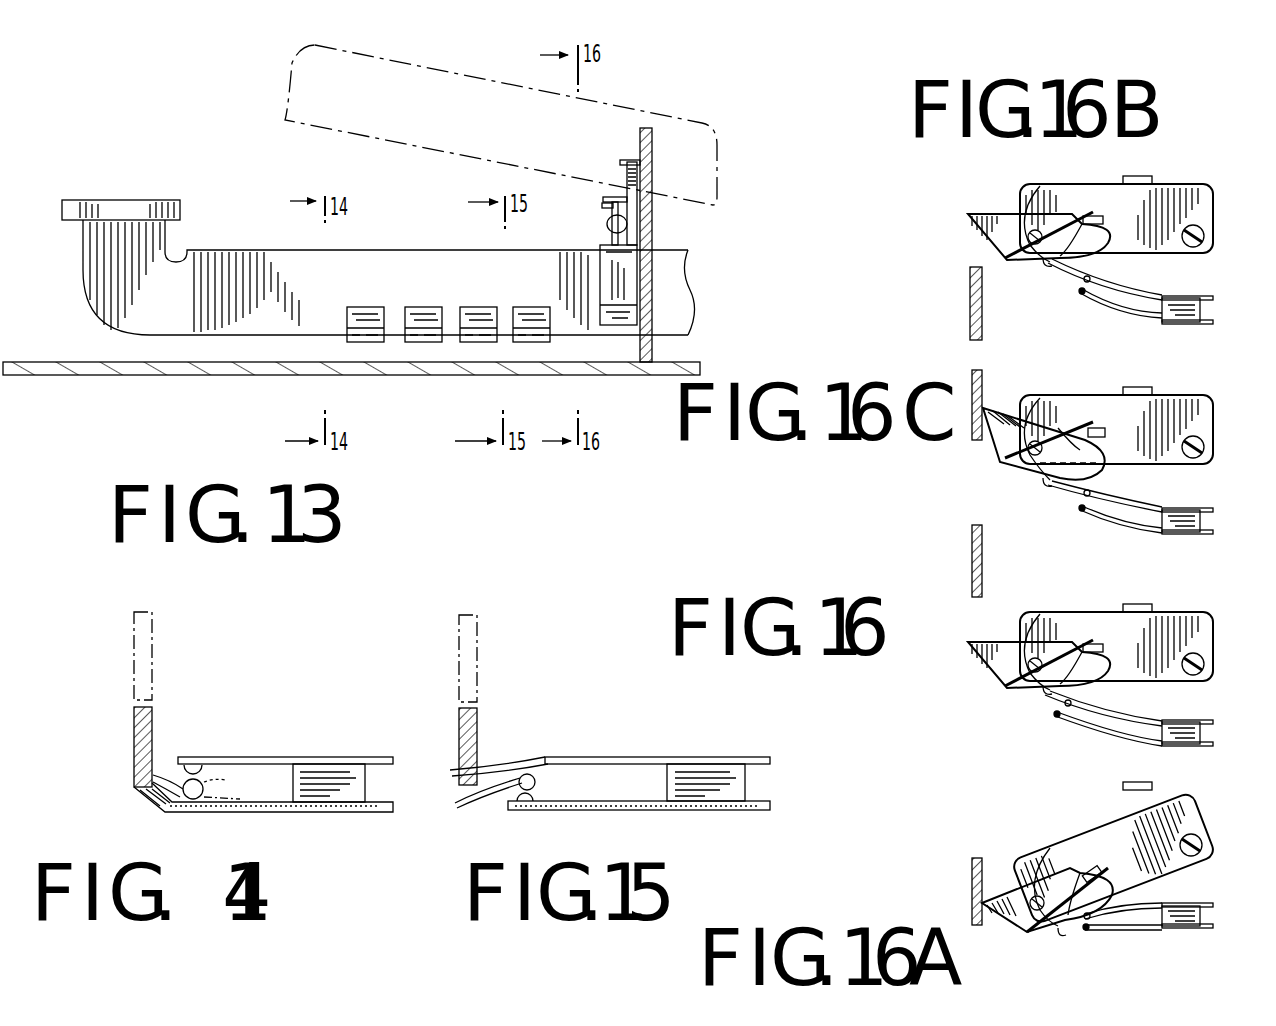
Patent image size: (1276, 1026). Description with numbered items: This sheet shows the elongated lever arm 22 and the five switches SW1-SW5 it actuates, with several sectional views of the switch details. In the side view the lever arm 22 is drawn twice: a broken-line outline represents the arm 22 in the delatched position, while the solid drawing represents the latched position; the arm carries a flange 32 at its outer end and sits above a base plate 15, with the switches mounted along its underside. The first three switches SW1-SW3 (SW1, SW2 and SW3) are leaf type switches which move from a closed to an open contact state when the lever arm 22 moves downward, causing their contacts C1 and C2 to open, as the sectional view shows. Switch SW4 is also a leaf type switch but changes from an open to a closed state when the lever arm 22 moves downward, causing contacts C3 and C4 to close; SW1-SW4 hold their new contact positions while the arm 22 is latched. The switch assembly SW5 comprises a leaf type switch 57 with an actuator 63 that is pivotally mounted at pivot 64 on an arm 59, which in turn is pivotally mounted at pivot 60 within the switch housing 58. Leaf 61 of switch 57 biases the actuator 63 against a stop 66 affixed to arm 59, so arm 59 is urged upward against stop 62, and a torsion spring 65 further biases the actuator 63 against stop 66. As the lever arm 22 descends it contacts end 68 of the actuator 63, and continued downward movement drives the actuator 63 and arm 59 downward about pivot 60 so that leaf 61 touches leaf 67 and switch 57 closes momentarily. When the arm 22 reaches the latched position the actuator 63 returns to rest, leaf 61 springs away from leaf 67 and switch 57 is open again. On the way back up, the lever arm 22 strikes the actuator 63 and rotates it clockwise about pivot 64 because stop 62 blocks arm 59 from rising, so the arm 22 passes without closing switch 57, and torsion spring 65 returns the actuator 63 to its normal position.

In FIG. 13, the base plate 15 is at (115, 375).
In FIG. 13, the lever arm 22 is at (292, 73).
In FIG. 14, the lever arm 22 is at (134, 640).
In FIG. 15, the lever arm 22 is at (480, 645).
In FIG. 16B, the lever arm 22 is at (983, 315).
In FIG. 16C, the lever arm 22 is at (982, 372).
In FIG. 16, the lever arm 22 is at (983, 550).
In FIG. 16A, the lever arm 22 is at (980, 925).
In FIG. 13, the handle flange 32 is at (150, 200).
In FIG. 13, the switch 57 is at (627, 263).
In FIG. 16B, the switch 57 is at (1195, 300).
In FIG. 16C, the switch 57 is at (1185, 512).
In FIG. 16, the switch 57 is at (1190, 722).
In FIG. 16A, the switch 57 is at (1185, 905).
In FIG. 16B, the latch assembly housing 58 is at (1134, 188).
In FIG. 16C, the latch assembly housing 58 is at (1137, 411).
In FIG. 16, the latch assembly housing 58 is at (1134, 624).
In FIG. 16A, the latch assembly housing 58 is at (1129, 846).
In FIG. 16B, the arm 59 is at (1205, 202).
In FIG. 16C, the arm 59 is at (1205, 420).
In FIG. 16, the arm 59 is at (1205, 630).
In FIG. 16A, the arm 59 is at (1200, 818).
In FIG. 16B, the pivot 60 is at (1207, 238).
In FIG. 16C, the pivot 60 is at (1207, 455).
In FIG. 16, the pivot 60 is at (1207, 665).
In FIG. 16A, the pivot 60 is at (1204, 848).
In FIG. 16B, the leaf 61 is at (1110, 290).
In FIG. 16C, the leaf 61 is at (1115, 505).
In FIG. 16, the leaf 61 is at (1118, 713).
In FIG. 16A, the leaf 61 is at (1120, 903).
In FIG. 16B, the stop 62 is at (1133, 176).
In FIG. 16C, the stop 62 is at (1133, 387).
In FIG. 16, the stop 62 is at (1128, 604).
In FIG. 16A, the stop 62 is at (1122, 785).
In FIG. 16B, the actuator 63 is at (1040, 262).
In FIG. 16C, the actuator 63 is at (1042, 480).
In FIG. 16, the actuator 63 is at (1040, 690).
In FIG. 16A, the actuator 63 is at (1062, 930).
In FIG. 16B, the pivot 64 is at (1030, 232).
In FIG. 16C, the pivot 64 is at (1025, 447).
In FIG. 16, the pivot 64 is at (1030, 660).
In FIG. 16A, the pivot 64 is at (1037, 903).
In FIG. 16B, the torsion spring 65 is at (1062, 226).
In FIG. 16C, the torsion spring 65 is at (1068, 430).
In FIG. 16, the torsion spring 65 is at (1072, 650).
In FIG. 16A, the torsion spring 65 is at (1066, 893).
In FIG. 16B, the stop 66 is at (1100, 222).
In FIG. 16C, the stop 66 is at (1105, 430).
In FIG. 16, the stop 66 is at (1098, 653).
In FIG. 16A, the stop 66 is at (1090, 870).
In FIG. 16B, the leaf 67 is at (1128, 316).
In FIG. 16C, the leaf 67 is at (1105, 522).
In FIG. 16, the leaf 67 is at (1090, 738).
In FIG. 16A, the leaf 67 is at (1120, 930).
In FIG. 16B, the end 68 is at (968, 216).
In FIG. 16C, the end 68 is at (985, 410).
In FIG. 16, the end 68 is at (968, 646).
In FIG. 16A, the end 68 is at (1035, 900).
In FIG. 13, the switch SW1 is at (347, 312).
In FIG. 13, the switch SW2 is at (405, 312).
In FIG. 13, the switch SW3 is at (460, 312).
In FIG. 13, the switch SW4 is at (513, 312).
In FIG. 15, the switch SW4 is at (672, 757).
In FIG. 13, the switch assembly SW5 is at (640, 310).
In FIG. 14, the leaf type switches SW1-SW3 is at (313, 757).
In FIG. 14, the contact C1 is at (184, 770).
In FIG. 14, the contact C2 is at (170, 810).
In FIG. 15, the contact C3 is at (505, 758).
In FIG. 15, the contact C4 is at (518, 800).